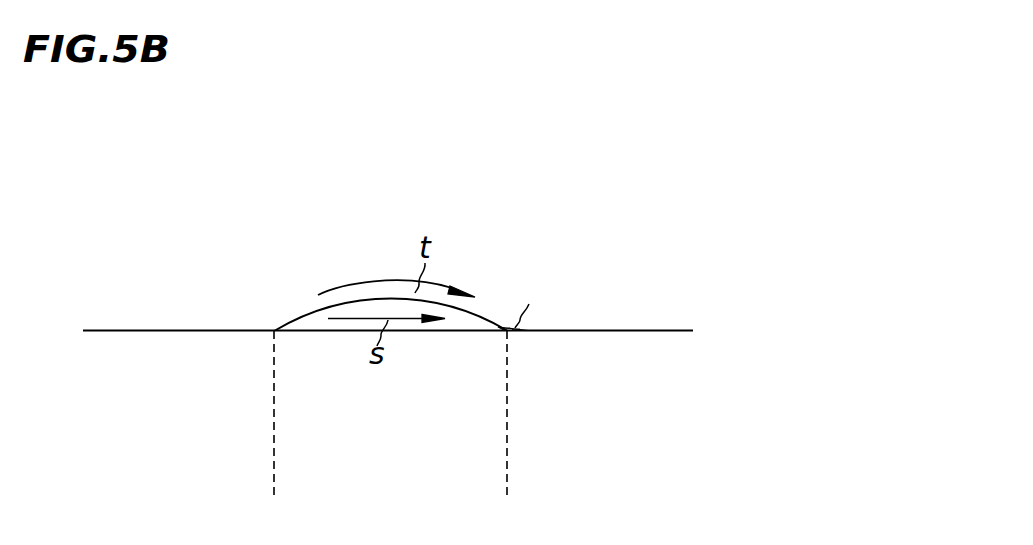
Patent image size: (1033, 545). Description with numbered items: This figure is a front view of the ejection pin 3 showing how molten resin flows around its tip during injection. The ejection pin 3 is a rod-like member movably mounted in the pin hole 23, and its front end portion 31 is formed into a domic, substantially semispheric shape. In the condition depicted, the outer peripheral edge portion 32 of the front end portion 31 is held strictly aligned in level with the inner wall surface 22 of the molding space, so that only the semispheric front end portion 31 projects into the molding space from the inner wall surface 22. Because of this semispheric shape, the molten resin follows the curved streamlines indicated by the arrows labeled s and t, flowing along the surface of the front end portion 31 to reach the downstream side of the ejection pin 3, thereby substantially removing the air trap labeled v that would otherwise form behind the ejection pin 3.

The ejection pin 3 is at (293, 320).
The front end portion 31 is at (303, 313).
The inner wall surface 22 is at (622, 329).
The outer peripheral edge portion 32 is at (440, 331).
The pin hole 23 is at (492, 457).